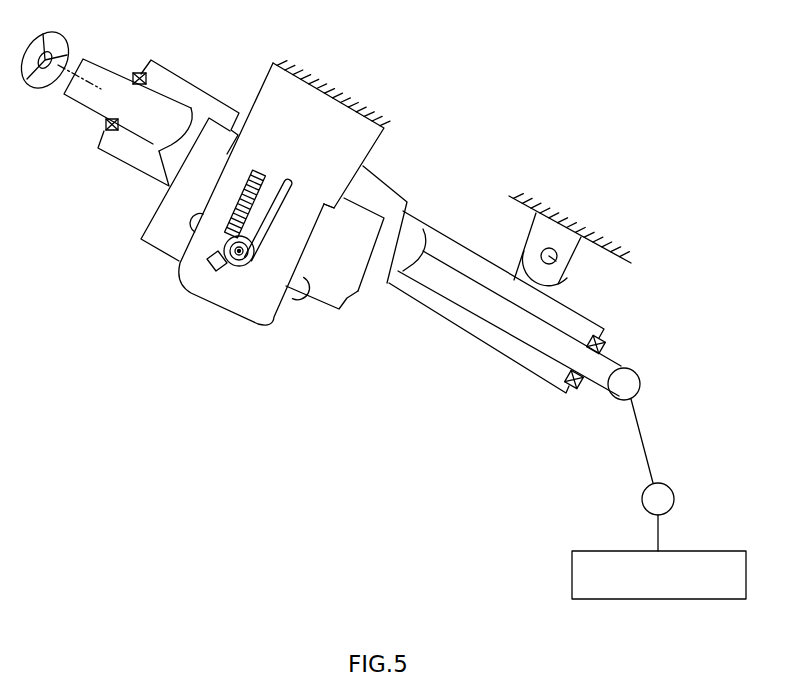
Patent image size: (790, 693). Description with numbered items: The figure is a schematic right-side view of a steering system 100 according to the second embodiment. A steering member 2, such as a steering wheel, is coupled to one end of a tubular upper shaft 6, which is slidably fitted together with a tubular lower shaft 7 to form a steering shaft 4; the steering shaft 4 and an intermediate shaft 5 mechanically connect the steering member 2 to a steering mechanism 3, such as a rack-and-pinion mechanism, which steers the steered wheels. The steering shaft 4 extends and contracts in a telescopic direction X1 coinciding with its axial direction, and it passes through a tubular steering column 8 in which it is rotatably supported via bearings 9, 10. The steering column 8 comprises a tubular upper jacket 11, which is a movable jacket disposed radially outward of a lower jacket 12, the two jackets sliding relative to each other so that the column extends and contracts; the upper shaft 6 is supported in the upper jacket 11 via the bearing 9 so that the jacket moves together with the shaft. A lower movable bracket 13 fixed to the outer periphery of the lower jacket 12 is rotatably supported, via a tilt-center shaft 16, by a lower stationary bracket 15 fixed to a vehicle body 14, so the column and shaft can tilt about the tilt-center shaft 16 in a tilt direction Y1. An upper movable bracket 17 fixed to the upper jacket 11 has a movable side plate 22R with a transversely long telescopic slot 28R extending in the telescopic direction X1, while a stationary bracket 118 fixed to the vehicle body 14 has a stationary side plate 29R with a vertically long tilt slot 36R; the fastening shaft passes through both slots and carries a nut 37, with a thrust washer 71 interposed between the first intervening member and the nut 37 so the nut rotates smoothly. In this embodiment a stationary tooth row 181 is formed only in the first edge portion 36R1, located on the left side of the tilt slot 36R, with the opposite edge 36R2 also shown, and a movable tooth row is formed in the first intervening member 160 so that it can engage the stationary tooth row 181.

The steering member 2 is at (28, 86).
The steering mechanism 3 is at (571, 573).
The steering shaft 4 is at (114, 65).
The intermediate shaft 5 is at (638, 448).
The upper shaft 6 is at (70, 95).
The lower shaft 7 is at (495, 313).
The steering column 8 is at (116, 169).
The bearing 9 is at (103, 126).
The bearing 10 is at (582, 387).
The upper jacket 11 is at (198, 86).
The lower jacket 12 is at (445, 237).
The movable bracket 13 is at (550, 285).
The vehicle body 14 is at (382, 117).
The stationary bracket 15 is at (582, 255).
The tilt-center shaft 16 is at (540, 252).
The movable bracket 17 is at (138, 225).
The movable side plate 22R is at (327, 284).
The telescopic slot 28R is at (293, 292).
The stationary side plate 29R is at (262, 82).
The tilt slot 36R is at (291, 178).
The first edge portion 36R1 is at (250, 179).
The nut 36R2 is at (287, 204).
The nut 37 is at (242, 266).
The thrust washer 71 is at (212, 285).
The steering system 100 is at (556, 117).
The stationary bracket 118 is at (388, 136).
The first intervening member 160 is at (238, 268).
The stationary tooth row 181 is at (244, 190).
The telescopic direction X1 is at (392, 313).
The tilt direction Y1 is at (133, 407).